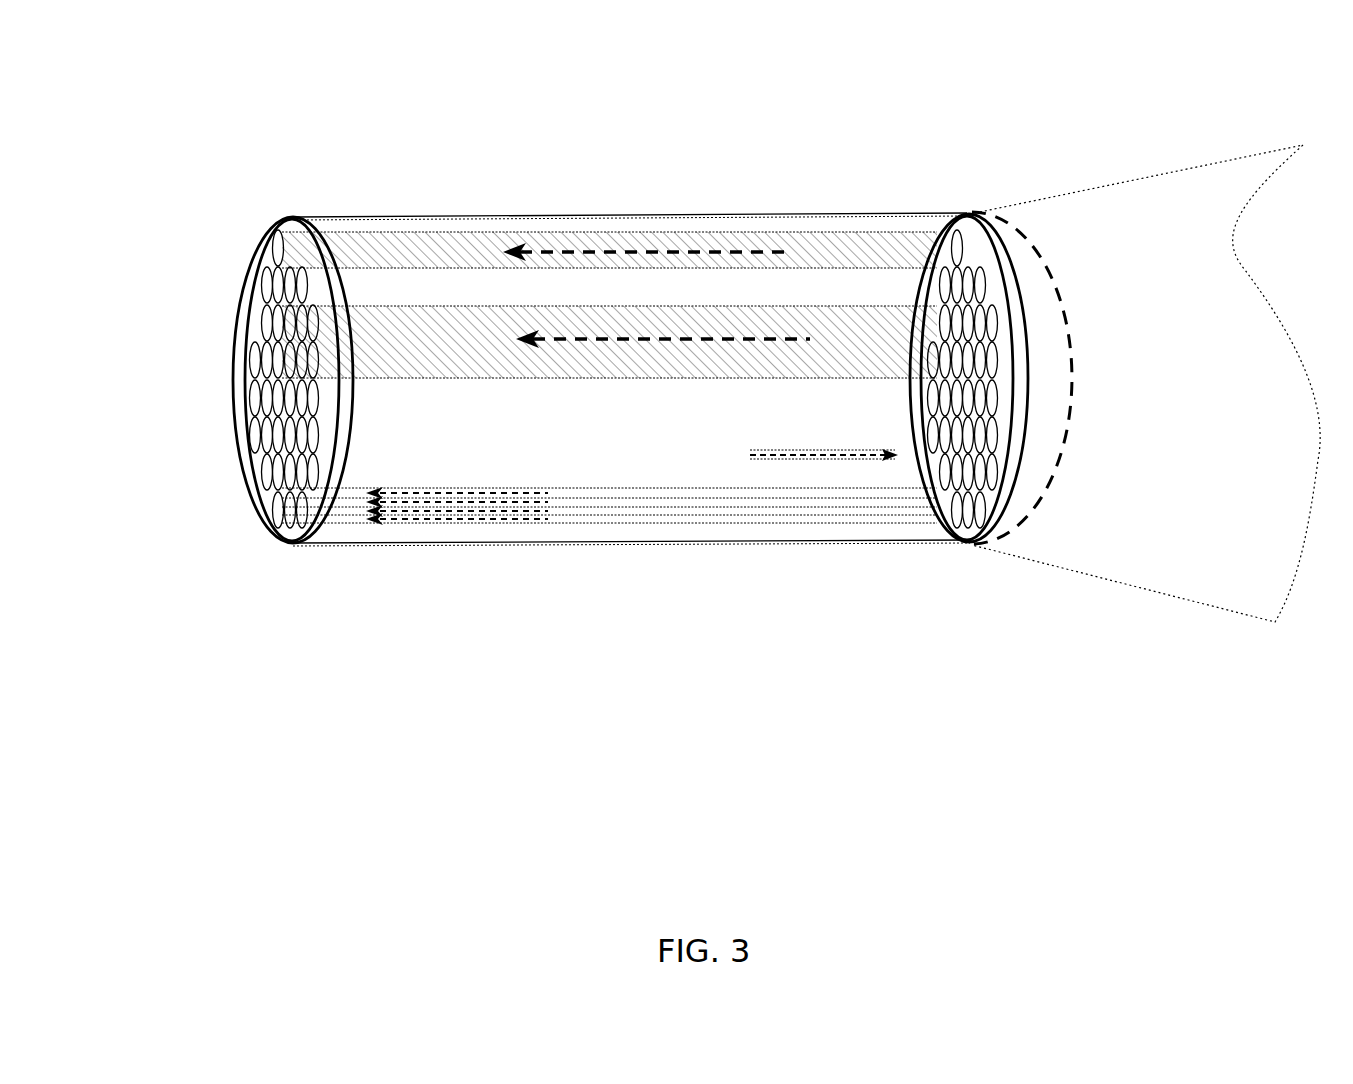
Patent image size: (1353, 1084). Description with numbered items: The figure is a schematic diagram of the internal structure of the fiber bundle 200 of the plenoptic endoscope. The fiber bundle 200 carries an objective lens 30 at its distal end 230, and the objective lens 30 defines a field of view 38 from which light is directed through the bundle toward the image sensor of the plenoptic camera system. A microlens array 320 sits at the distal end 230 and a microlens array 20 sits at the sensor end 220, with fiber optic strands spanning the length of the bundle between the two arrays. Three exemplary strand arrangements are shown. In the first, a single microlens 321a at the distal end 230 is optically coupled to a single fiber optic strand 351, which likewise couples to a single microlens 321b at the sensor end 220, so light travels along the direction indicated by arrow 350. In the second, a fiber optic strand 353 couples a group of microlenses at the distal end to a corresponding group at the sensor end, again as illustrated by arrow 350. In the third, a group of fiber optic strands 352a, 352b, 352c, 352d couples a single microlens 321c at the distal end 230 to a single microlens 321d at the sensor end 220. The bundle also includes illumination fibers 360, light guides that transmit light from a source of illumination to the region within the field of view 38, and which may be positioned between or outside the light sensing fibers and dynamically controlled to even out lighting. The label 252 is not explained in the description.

The fiber bundle 200 is at (387, 150).
The microlens array 20 is at (270, 223).
The objective lens 30 is at (1095, 360).
The field of view 38 is at (1235, 157).
The sensor end 220 is at (296, 580).
The distal end 230 is at (982, 583).
The microlens array 320 is at (1020, 268).
The microlens 321a is at (963, 240).
The microlens 321b is at (268, 248).
The microlens 321c is at (1000, 494).
The microlens 321d is at (297, 507).
The arrow 350 is at (755, 247).
The fiber optic strand 351 is at (668, 222).
The fiber optic strand 352a is at (620, 492).
The fiber optic strand 352b is at (667, 500).
The fiber optic strand 352c is at (732, 510).
The fiber optic strand 352d is at (797, 518).
The fiber optic strand 353 is at (428, 305).
The illumination fibers 360 is at (900, 462).
The flow region 252 is at (638, 839).